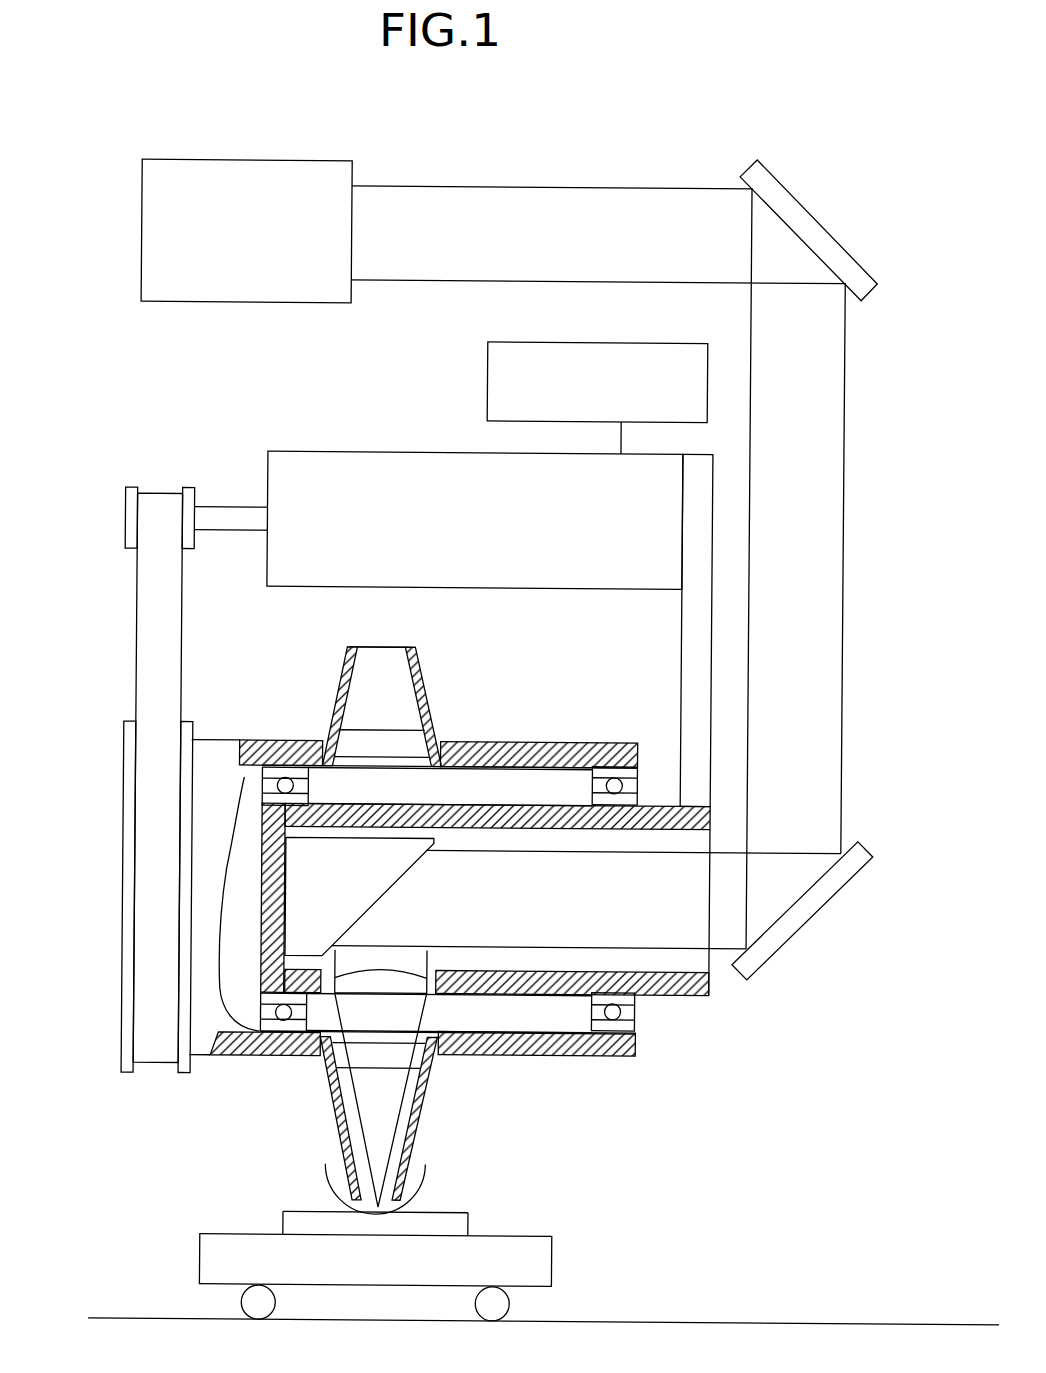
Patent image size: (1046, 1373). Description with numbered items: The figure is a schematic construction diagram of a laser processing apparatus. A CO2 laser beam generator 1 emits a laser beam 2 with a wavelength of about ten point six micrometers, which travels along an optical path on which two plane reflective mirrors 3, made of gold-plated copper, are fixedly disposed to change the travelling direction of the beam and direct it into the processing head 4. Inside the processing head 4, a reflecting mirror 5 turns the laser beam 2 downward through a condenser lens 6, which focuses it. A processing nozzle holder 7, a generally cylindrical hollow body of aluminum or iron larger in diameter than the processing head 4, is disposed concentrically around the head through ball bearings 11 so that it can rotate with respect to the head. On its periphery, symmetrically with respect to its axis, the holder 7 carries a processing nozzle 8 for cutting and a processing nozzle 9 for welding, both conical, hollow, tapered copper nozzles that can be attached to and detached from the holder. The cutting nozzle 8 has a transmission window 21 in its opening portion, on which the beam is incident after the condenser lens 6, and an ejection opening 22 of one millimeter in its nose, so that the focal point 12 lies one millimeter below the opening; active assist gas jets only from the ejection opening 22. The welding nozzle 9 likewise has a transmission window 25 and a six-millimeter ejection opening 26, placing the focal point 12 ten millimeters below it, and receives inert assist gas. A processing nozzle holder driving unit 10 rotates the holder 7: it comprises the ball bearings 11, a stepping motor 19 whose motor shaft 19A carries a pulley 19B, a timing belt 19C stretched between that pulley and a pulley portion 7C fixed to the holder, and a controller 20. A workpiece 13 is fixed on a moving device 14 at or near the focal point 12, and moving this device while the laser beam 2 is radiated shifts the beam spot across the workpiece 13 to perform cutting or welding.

The CO2 laser beam generator 1 is at (222, 287).
The laser beam 2 is at (478, 186).
The plane reflective mirrors 3 is at (779, 193).
The processing head 4 is at (712, 988).
The reflecting mirror 5 is at (401, 891).
The condenser lens 6 is at (422, 976).
The processing nozzle holder 7 is at (540, 1057).
The pulley portion 7C is at (127, 936).
The processing nozzle for cutting 8 is at (428, 1098).
The processing nozzle for welding 9 is at (425, 666).
The processing nozzle holder driving unit 10 is at (368, 426).
The ball bearings 11 is at (263, 780).
The focal point 12 is at (404, 1211).
The workpiece 13 is at (454, 1228).
The moving device 14 is at (534, 1255).
The stepping motor 19 is at (295, 455).
The motor shaft 19A is at (224, 512).
The pulley 19B is at (123, 523).
The timing belt 19C is at (139, 597).
The controller 20 is at (485, 374).
The transmission window 21 is at (343, 1061).
The ejection opening 22 is at (364, 1204).
The transmission window 25 is at (410, 741).
The ejection opening 26 is at (364, 646).